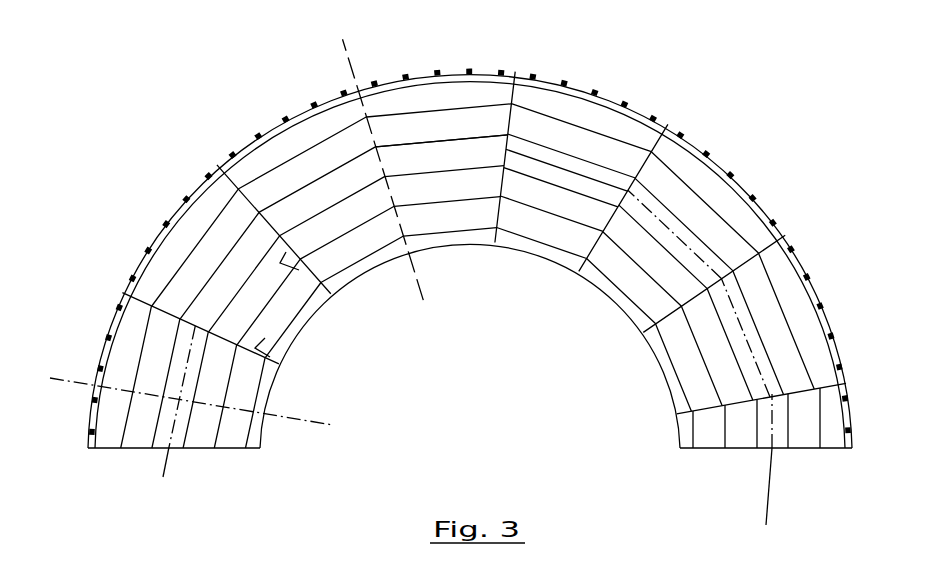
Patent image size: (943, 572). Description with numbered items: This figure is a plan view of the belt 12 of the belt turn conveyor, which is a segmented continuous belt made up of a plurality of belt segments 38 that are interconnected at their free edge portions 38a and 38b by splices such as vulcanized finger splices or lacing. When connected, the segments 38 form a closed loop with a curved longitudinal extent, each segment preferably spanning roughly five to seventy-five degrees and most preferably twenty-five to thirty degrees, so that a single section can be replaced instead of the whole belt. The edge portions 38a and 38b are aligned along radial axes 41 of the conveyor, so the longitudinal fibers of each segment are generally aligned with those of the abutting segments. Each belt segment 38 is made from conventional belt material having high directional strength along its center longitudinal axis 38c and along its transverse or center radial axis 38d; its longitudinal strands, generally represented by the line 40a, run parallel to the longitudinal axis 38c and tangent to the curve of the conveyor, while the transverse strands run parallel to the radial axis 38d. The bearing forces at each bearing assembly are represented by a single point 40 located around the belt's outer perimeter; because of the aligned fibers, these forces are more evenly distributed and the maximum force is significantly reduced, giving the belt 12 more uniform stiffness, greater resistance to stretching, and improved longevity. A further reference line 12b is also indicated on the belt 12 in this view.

The belt 12 is at (580, 120).
The center line of end lamination segment 12b is at (770, 495).
The belt segment 38 is at (355, 253).
The free edge portion 38a is at (163, 313).
The free edge portion 38b is at (252, 200).
The longitudinal axis 38c is at (165, 473).
The transverse axis 38d is at (60, 383).
The bearing assembly location 40 is at (777, 222).
The line representing longitudinal fibers 40a is at (448, 138).
The radial axis 41 is at (350, 52).